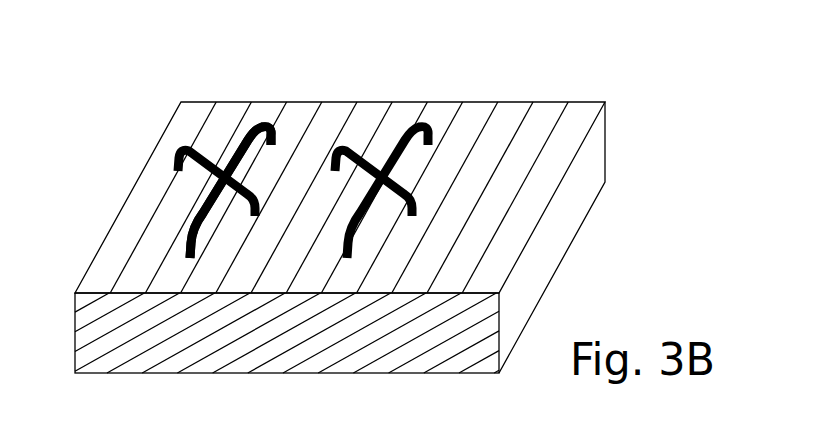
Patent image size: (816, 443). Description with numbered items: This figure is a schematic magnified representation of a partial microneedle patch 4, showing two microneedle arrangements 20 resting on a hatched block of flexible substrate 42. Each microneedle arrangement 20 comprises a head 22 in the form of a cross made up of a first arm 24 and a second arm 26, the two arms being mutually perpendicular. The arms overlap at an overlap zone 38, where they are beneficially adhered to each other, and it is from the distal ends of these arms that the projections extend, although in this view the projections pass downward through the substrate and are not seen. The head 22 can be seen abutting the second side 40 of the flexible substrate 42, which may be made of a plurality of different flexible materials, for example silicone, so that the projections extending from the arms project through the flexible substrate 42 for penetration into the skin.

The partial microneedle patch 4 is at (390, 189).
The microneedle arrangement 20 is at (354, 240).
The head 22 is at (235, 212).
The first arm 24 is at (203, 177).
The second arm 26 is at (250, 162).
The overlap zone 38 is at (388, 212).
The second side 40 is at (572, 128).
The flexible substrate 42 is at (613, 137).